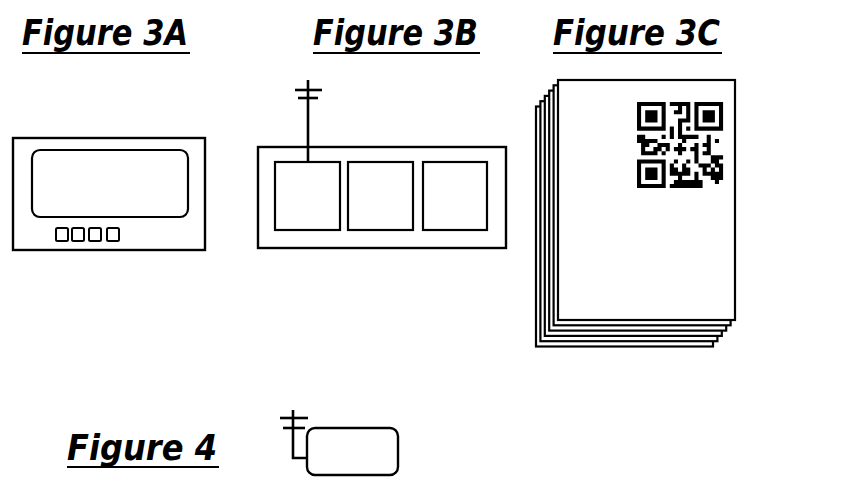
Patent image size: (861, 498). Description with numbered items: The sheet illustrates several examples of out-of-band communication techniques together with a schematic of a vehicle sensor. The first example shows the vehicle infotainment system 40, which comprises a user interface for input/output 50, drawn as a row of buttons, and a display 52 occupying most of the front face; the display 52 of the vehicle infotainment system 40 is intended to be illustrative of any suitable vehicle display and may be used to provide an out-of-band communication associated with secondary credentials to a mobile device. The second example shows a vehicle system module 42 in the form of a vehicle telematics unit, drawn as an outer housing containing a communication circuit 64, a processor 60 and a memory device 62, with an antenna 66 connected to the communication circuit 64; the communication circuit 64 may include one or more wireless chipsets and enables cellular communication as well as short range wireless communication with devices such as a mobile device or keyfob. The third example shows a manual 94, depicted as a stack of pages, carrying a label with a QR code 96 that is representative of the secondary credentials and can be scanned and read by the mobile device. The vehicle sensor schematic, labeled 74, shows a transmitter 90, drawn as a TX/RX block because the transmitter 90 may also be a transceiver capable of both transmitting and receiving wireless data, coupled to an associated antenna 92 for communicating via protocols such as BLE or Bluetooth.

In FIG. 3A, the vehicle infotainment system 40 is at (73, 131).
In FIG. 3A, the display 52 is at (100, 195).
In FIG. 3A, the user interface for input/output 50 is at (138, 238).
In FIG. 3B, the vehicle system module 42 is at (440, 147).
In FIG. 3B, the communication circuit 64 is at (298, 200).
In FIG. 3B, the processor 60 is at (370, 200).
In FIG. 3B, the memory device 62 is at (445, 200).
In FIG. 3B, the antenna 66 is at (309, 124).
In FIG. 3C, the manual 94 is at (605, 359).
In FIG. 3C, the QR code 96 is at (637, 172).
In FIG. 4, the transceiver unit 74 is at (362, 402).
In FIG. 4, the transmitter 90 is at (375, 428).
In FIG. 4, the antenna 92 is at (292, 440).